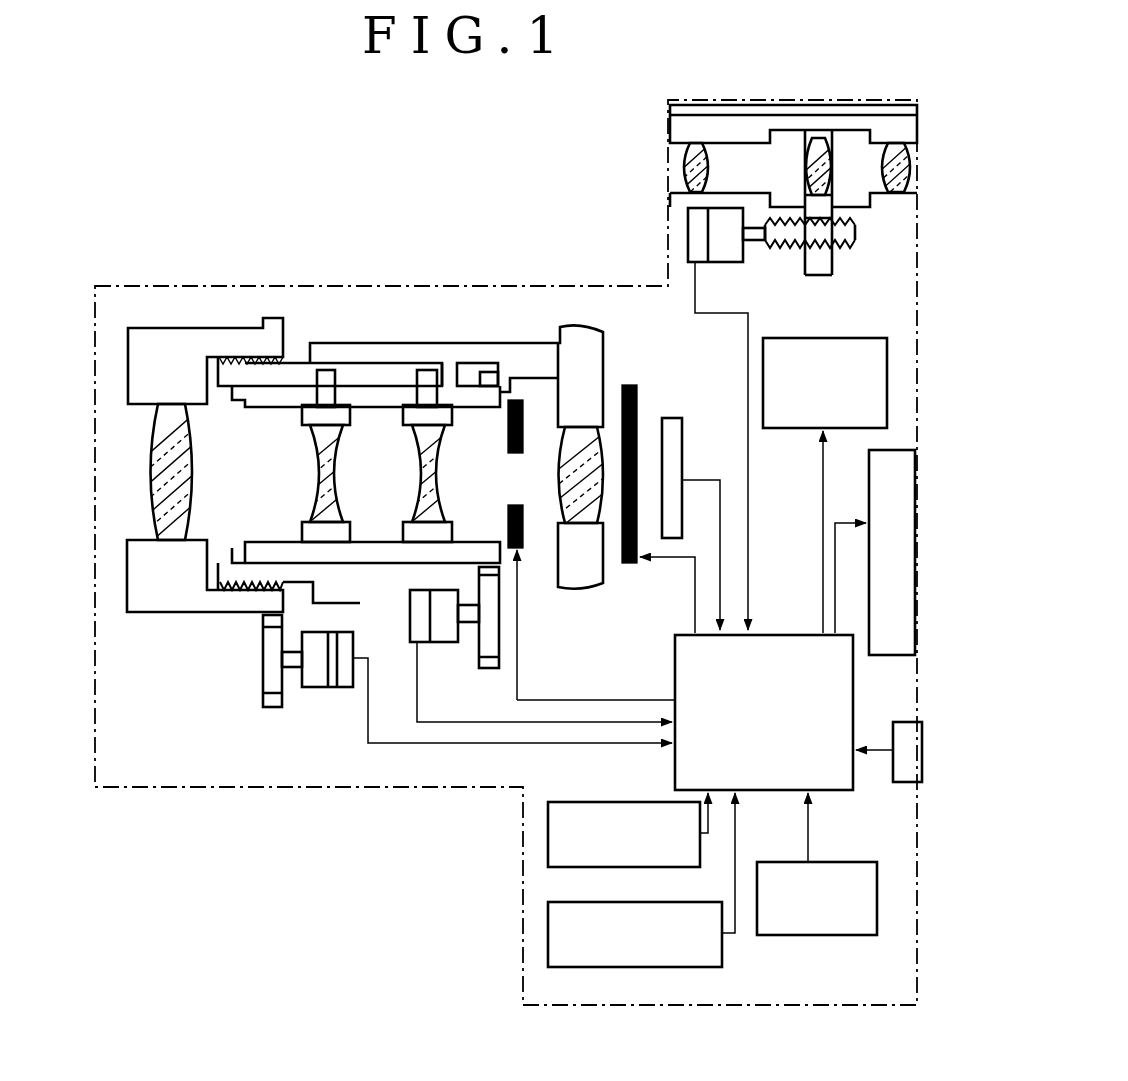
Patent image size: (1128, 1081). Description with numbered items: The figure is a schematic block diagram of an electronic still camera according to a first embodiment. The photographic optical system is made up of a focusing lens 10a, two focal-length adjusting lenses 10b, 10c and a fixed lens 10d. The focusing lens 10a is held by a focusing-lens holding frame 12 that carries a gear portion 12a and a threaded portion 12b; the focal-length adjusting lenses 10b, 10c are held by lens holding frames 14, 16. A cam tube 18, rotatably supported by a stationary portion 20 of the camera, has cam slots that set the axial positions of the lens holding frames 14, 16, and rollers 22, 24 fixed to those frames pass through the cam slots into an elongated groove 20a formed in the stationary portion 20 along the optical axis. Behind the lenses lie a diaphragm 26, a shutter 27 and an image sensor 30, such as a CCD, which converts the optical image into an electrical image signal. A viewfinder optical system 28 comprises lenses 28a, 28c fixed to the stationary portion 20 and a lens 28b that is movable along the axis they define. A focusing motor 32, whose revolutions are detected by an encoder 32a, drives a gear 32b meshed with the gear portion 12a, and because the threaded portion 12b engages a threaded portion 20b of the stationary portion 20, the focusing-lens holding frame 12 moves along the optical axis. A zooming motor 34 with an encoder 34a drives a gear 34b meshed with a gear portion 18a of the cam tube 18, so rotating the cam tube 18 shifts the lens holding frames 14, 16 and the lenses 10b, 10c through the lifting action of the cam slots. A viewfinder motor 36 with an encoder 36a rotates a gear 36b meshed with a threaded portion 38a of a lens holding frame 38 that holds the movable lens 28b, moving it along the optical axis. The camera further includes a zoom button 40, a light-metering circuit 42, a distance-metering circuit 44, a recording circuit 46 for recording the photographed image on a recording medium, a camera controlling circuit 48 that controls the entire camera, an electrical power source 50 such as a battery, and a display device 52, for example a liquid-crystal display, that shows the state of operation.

The focusing lens 10a is at (160, 445).
The focal-length adjusting lens 10b is at (318, 488).
The focal-length adjusting lens 10c is at (418, 488).
The fixed lens 10d is at (565, 475).
The focusing-lens holding frame 12 is at (148, 330).
The gear portion 12a is at (265, 620).
The threaded portion 12b is at (240, 595).
The lens holding frame 14 is at (305, 412).
The lens holding frame 16 is at (443, 415).
The cam tube 18 is at (398, 390).
The gear portion 18a is at (478, 572).
The stationary portion 20 is at (582, 340).
The elongated groove 20a is at (363, 378).
The threaded portion 20b is at (225, 545).
The roller 22 is at (325, 372).
The roller 24 is at (428, 372).
The diaphragm 26 is at (525, 528).
The shutter 27 is at (637, 390).
The viewfinder optical system 28 is at (662, 125).
The lens 28a is at (685, 178).
The lens 28b is at (812, 162).
The lens 28c is at (892, 162).
The image sensor 30 is at (672, 428).
The focusing motor 32 is at (313, 680).
The encoder 32a is at (338, 680).
The gear 32b is at (268, 700).
The zooming motor 34 is at (440, 620).
The encoder 34a is at (412, 620).
The gear 34b is at (490, 668).
The viewfinder motor 36 is at (735, 250).
The encoder 36a is at (696, 235).
The gear 36b is at (825, 228).
The lens holding frame 38 is at (830, 200).
The threaded portion 38a is at (825, 255).
The zoom button 40 is at (902, 785).
The light-metering circuit 42 is at (548, 848).
The distance-metering circuit 44 is at (548, 948).
The recording circuit 46 is at (783, 430).
The camera controlling circuit 48 is at (675, 660).
The electrical power source 50 is at (857, 940).
The display device 52 is at (888, 658).